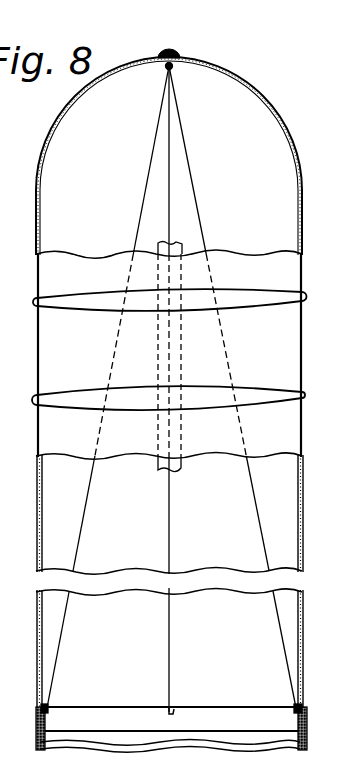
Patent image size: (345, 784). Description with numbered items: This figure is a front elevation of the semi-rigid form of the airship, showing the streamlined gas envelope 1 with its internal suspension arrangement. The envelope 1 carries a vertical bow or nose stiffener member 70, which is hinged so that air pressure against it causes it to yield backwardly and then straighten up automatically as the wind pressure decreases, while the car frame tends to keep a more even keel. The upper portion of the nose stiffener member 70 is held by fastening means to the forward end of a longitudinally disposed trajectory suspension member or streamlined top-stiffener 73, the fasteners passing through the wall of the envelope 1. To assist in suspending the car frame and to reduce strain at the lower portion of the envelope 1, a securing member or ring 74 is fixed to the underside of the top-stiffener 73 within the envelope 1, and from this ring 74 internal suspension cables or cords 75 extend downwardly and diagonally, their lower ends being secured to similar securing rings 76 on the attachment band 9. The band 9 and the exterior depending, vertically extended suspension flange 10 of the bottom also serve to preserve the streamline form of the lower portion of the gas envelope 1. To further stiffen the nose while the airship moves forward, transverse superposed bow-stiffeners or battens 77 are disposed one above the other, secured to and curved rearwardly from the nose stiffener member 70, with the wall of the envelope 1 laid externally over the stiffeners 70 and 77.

The gas envelope 1 is at (294, 421).
The attachment band 9 is at (117, 715).
The suspension flange 10 is at (38, 724).
The nose stiffener member 70 is at (182, 459).
The top-stiffener 73 is at (182, 54).
The securing ring 74 is at (166, 68).
The suspension cables 75 is at (194, 198).
The securing rings 76 is at (53, 707).
The bow-stiffeners 77 is at (263, 396).